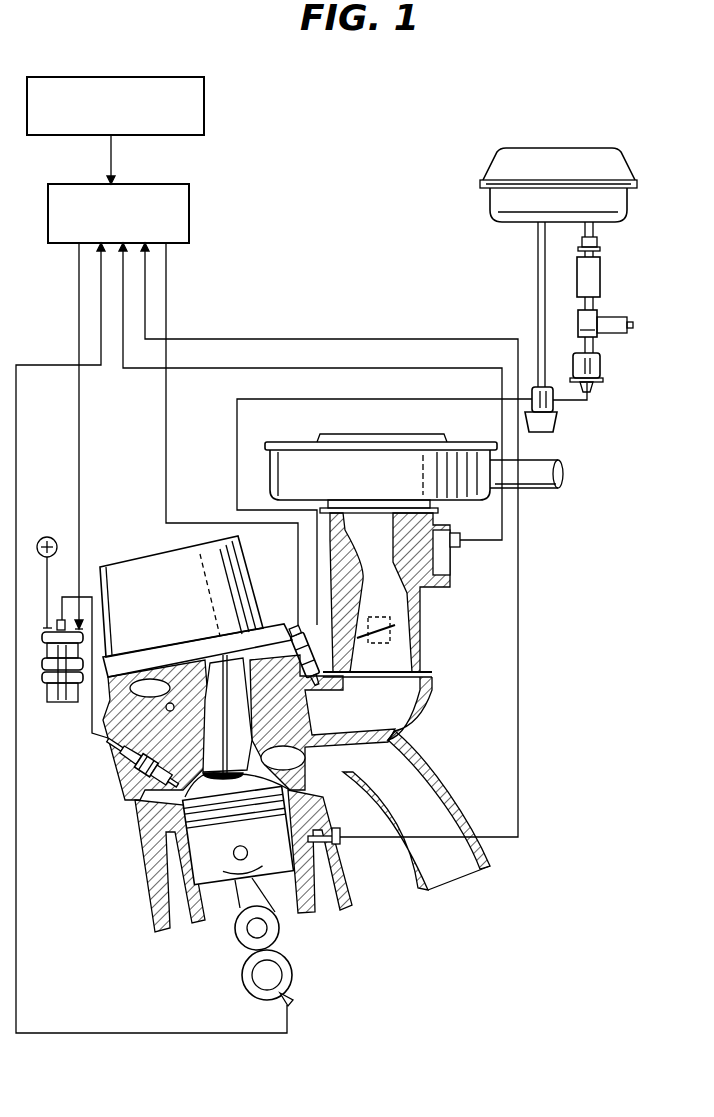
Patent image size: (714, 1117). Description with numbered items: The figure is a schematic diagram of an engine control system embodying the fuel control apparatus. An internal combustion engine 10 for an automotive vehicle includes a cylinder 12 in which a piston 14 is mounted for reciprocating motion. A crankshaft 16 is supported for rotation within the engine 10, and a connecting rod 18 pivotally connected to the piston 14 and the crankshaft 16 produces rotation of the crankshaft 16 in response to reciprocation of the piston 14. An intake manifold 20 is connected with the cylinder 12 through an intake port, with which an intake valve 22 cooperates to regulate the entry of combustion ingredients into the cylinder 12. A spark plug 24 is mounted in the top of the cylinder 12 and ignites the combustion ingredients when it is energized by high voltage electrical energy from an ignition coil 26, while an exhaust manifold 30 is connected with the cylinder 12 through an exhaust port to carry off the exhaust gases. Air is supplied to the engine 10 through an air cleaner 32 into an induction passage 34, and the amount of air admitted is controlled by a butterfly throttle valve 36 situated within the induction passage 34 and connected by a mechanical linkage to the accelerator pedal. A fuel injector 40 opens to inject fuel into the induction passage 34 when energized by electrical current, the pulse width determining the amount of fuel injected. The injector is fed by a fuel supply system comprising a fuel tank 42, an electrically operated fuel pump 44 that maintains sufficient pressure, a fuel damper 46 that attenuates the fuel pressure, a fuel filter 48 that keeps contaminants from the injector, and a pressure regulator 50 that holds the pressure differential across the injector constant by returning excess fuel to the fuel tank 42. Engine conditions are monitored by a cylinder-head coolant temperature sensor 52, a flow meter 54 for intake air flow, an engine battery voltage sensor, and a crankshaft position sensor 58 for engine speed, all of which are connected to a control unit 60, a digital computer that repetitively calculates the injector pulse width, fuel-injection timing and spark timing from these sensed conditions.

The internal combustion engine 10 is at (353, 875).
The cylinder 12 is at (198, 800).
The piston 14 is at (200, 876).
The crankshaft 16 is at (262, 928).
The connecting rod 18 is at (238, 905).
The intake manifold 20 is at (413, 705).
The intake valve 22 is at (233, 767).
The spark plug 24 is at (147, 773).
The ignition coil 26 is at (60, 703).
The exhaust manifold 30 is at (463, 788).
The air cleaner 32 is at (297, 452).
The induction passage 34 is at (383, 598).
The butterfly throttle valve 36 is at (393, 633).
The fuel injector 40 is at (300, 632).
The fuel tank 42 is at (620, 160).
The fuel pump 44 is at (600, 272).
The fuel damper 46 is at (624, 317).
The fuel filter 48 is at (603, 359).
The pressure regulator 50 is at (557, 425).
The cylinder-head coolant temperature sensor 52 is at (336, 828).
The flow meter 54 is at (433, 537).
The crankshaft position sensor 58 is at (293, 976).
The control unit 60 is at (189, 207).